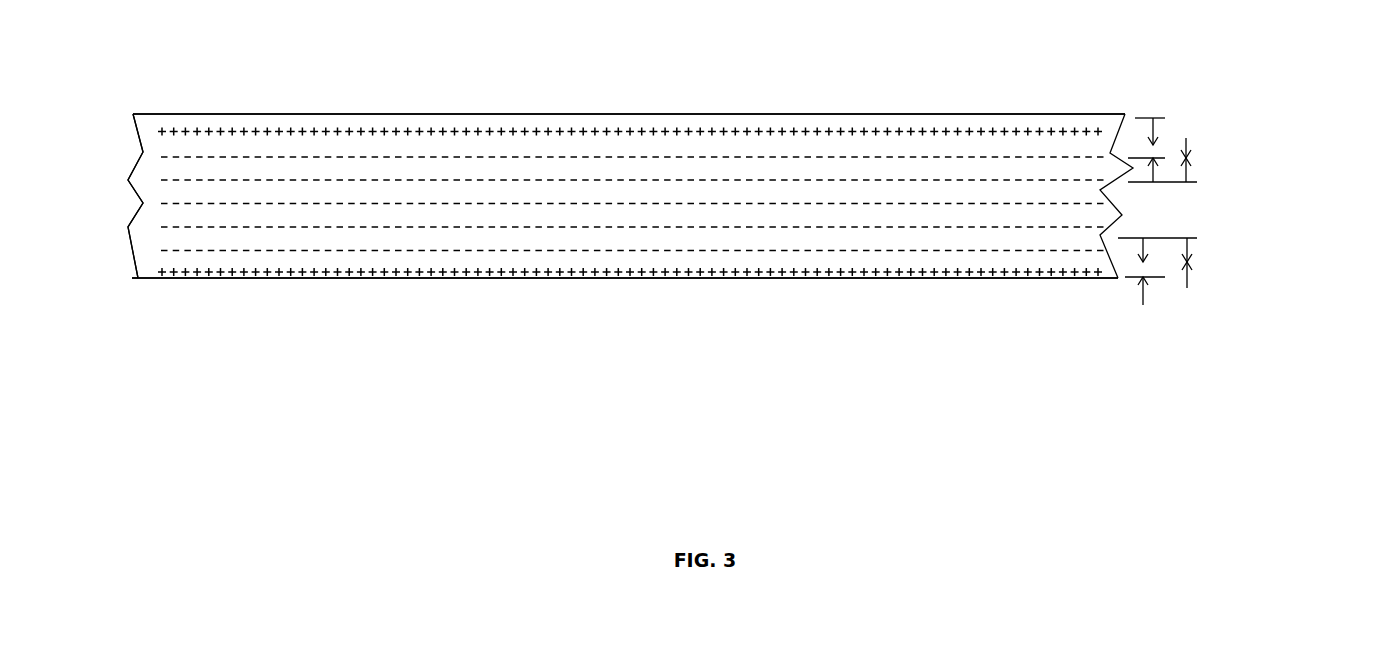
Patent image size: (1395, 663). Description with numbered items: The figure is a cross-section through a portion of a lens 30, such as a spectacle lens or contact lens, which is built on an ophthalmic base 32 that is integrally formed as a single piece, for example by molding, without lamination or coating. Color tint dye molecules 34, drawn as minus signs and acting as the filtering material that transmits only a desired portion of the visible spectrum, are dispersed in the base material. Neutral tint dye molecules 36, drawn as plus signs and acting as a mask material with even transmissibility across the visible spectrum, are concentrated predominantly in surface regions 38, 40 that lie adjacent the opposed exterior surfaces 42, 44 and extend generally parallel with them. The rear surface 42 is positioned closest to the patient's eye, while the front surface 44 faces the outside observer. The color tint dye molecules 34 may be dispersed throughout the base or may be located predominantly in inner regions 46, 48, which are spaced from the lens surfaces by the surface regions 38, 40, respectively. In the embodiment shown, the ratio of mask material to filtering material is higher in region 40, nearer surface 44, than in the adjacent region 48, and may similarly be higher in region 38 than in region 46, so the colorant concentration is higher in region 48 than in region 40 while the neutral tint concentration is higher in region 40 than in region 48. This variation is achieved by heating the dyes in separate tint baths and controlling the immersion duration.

The lens 30 is at (630, 145).
The ophthalmic base 32 is at (130, 243).
The color tint dye molecules 34 is at (278, 204).
The neutral tint dye molecules 36 is at (630, 210).
The surface region 38 is at (1215, 316).
The surface region 40 is at (1250, 101).
The rear exterior surface 42 is at (951, 280).
The front exterior surface 44 is at (707, 113).
The region 46 is at (1242, 268).
The region 48 is at (1253, 175).